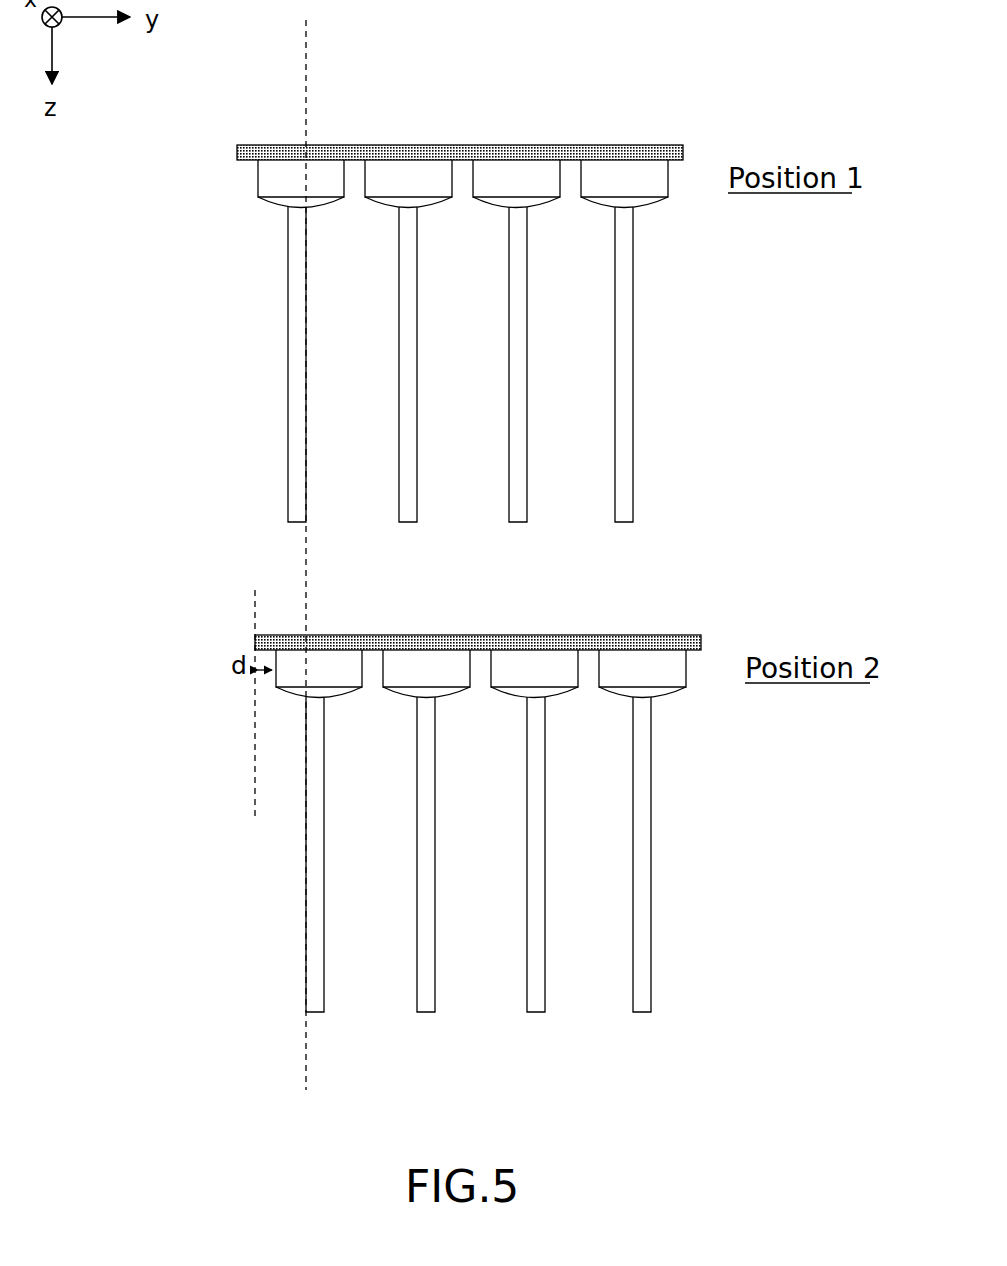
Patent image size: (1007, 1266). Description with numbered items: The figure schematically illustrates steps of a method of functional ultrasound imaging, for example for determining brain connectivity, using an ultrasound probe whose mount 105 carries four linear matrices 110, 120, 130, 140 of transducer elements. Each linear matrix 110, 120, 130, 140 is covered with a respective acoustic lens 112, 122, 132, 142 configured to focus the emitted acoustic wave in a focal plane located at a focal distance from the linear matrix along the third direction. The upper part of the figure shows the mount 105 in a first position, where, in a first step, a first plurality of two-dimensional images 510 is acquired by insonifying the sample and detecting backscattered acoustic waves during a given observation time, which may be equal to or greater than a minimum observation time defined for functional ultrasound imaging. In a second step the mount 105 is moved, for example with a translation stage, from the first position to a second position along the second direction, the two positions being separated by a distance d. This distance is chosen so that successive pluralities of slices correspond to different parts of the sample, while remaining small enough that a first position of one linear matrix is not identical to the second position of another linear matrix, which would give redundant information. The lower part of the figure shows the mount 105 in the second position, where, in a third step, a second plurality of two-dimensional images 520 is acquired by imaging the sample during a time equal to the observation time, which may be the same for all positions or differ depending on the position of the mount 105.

The mount 105 is at (687, 147).
The linear matrix 110 is at (283, 178).
The acoustic lens 112 is at (273, 205).
The linear matrix 120 is at (416, 173).
The acoustic lens 122 is at (393, 208).
The linear matrix 130 is at (525, 173).
The acoustic lens 132 is at (498, 207).
The linear matrix 140 is at (630, 172).
The acoustic lens 142 is at (608, 207).
The first plurality of 2D images 510 is at (650, 335).
The second plurality of 2D images 520 is at (665, 825).